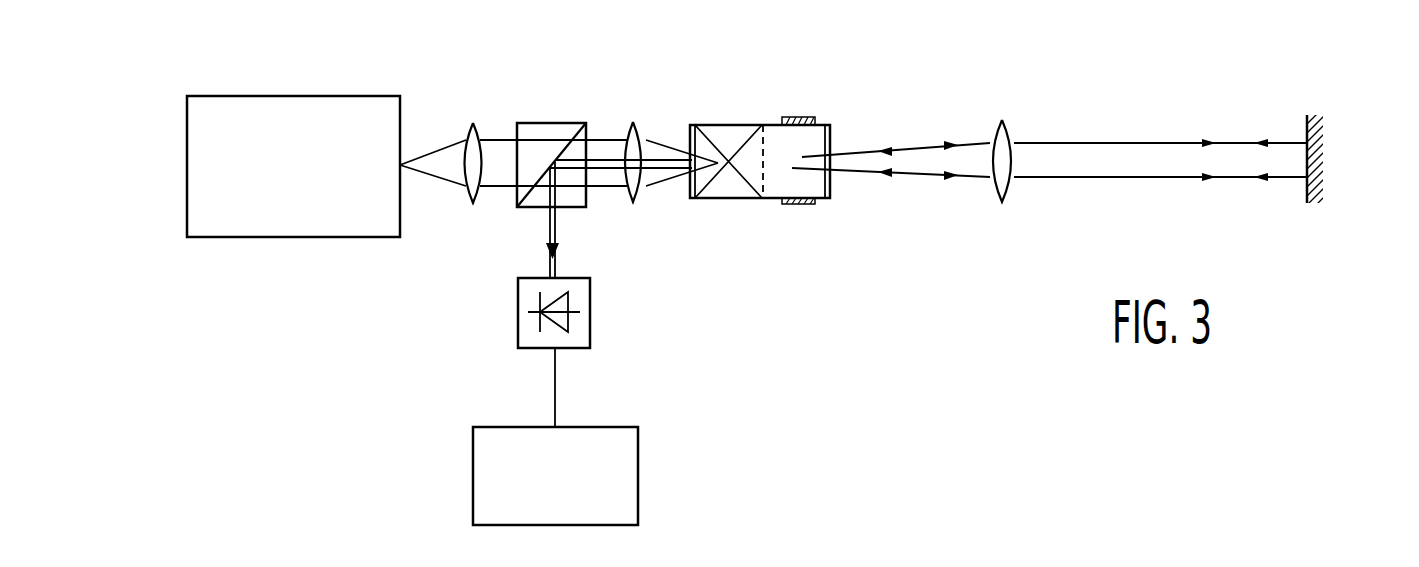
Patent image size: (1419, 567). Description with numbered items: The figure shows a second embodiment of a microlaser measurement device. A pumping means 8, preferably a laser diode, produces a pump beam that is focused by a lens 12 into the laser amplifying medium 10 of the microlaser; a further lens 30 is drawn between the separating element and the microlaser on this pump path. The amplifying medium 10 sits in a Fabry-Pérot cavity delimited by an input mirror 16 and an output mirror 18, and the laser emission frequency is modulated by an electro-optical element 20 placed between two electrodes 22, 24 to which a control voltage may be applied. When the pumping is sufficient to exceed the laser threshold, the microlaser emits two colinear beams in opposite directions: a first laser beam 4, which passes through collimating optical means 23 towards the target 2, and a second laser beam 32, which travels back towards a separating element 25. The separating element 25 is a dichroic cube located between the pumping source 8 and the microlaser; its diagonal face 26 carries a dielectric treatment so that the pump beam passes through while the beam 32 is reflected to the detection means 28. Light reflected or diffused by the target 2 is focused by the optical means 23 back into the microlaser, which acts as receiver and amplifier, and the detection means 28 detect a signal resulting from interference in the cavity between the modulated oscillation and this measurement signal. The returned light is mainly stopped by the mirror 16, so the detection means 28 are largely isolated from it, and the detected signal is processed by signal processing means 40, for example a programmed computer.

The target 2 is at (1312, 120).
The first laser beam 4 is at (1182, 143).
The pumping means 8 is at (263, 108).
The laser amplifying medium 10 is at (730, 133).
The optical means 12 is at (470, 125).
The input mirror 16 is at (692, 200).
The output mirror 18 is at (830, 193).
The electro-optical element 20 is at (782, 145).
The electrode 22 is at (805, 118).
The optical means of collimating 23 is at (1002, 140).
The electrode 24 is at (798, 205).
The separating element 25 is at (542, 125).
The diagonal face 26 is at (570, 128).
The detection means 28 is at (580, 335).
The lens 30 is at (637, 130).
The second laser beam 32 is at (662, 172).
The signal processing means 40 is at (633, 465).